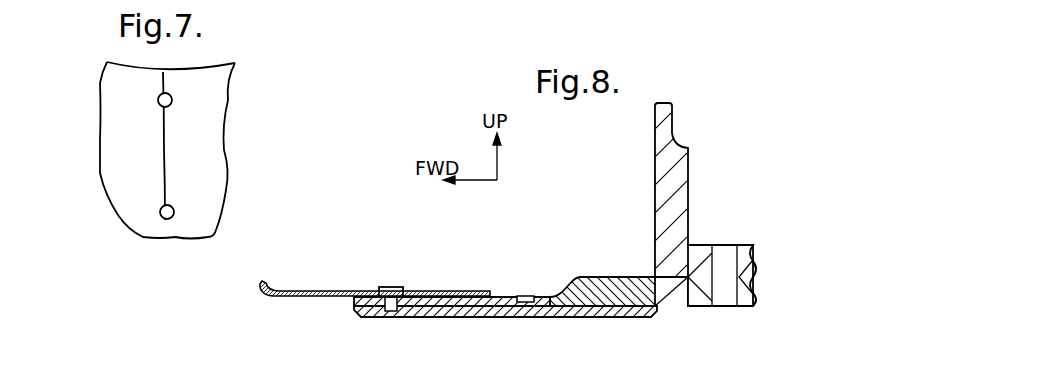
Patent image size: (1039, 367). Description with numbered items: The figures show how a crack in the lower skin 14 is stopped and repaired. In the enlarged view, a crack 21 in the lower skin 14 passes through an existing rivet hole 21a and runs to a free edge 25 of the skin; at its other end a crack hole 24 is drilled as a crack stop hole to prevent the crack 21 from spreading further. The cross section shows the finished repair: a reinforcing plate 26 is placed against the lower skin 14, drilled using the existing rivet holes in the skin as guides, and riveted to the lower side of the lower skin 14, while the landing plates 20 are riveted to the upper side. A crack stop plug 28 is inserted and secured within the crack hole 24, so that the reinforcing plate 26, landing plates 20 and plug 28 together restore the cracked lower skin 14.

In FIG. 7, the lower skin 14 is at (203, 192).
In FIG. 8, the lower skin 14 is at (612, 283).
In FIG. 8, the landing plate 20 is at (312, 297).
In FIG. 7, the crack 21 is at (163, 157).
In FIG. 8, the crack 21 is at (416, 310).
In FIG. 7, the rivet hole 21a is at (158, 101).
In FIG. 7, the crack hole 24 is at (160, 213).
In FIG. 7, the free edge 25 is at (127, 63).
In FIG. 8, the reinforcing plate 26 is at (615, 310).
In FIG. 8, the crack stop plug 28 is at (523, 296).